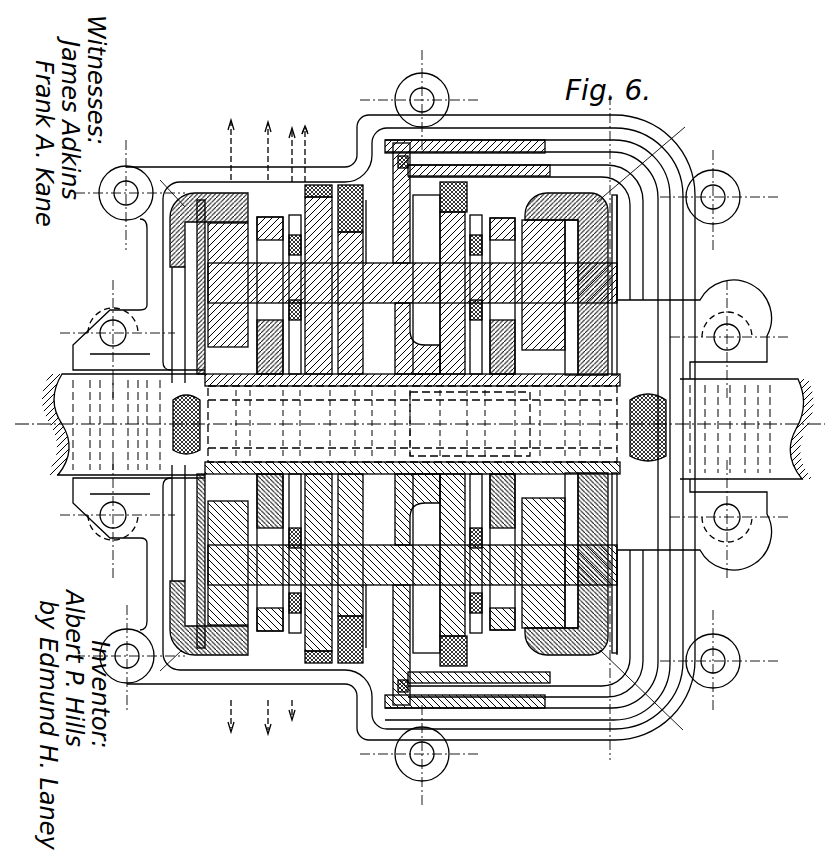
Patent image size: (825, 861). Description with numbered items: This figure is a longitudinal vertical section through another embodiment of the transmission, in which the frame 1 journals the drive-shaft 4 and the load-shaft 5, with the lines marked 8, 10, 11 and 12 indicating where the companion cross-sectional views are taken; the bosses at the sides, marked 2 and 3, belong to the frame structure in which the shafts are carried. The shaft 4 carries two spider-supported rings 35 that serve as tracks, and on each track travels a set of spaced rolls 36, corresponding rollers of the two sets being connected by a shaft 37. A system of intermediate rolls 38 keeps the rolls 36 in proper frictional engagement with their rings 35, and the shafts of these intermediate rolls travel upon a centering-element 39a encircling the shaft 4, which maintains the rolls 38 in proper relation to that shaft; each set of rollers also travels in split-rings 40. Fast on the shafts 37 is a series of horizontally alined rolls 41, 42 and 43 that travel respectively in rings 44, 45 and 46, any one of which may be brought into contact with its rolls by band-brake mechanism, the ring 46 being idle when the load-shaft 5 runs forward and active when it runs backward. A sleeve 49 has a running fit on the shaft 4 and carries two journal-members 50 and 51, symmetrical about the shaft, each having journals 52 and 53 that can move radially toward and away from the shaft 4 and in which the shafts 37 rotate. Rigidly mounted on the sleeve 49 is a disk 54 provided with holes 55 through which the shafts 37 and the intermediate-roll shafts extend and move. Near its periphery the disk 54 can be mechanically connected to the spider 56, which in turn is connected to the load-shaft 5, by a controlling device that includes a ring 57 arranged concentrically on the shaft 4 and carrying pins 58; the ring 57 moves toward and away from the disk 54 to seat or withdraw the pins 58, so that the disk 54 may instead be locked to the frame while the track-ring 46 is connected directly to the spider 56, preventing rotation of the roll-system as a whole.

The frame 1 is at (482, 742).
The left bearing boss 2 is at (120, 536).
The right bearing boss 3 is at (700, 536).
The drive-shaft 4 is at (68, 477).
The load-shaft 5 is at (775, 468).
The section line 8— 8 is at (519, 96).
The section line 10— 10 is at (231, 425).
The section line 11— 11 is at (296, 420).
The section line 12— 12 is at (269, 427).
The spider-supported rings 35 is at (205, 225).
The rolls 36 is at (235, 300).
The shaft 37 is at (345, 198).
The intermediate rolls 38 is at (266, 216).
The centering-element 39a is at (215, 262).
The split-rings 40 is at (274, 168).
The roll 41 is at (345, 184).
The roll 42 is at (350, 232).
The roll 43 is at (455, 164).
The ring 44 is at (296, 214).
The ring 45 is at (322, 184).
The ring 46 is at (476, 214).
The sleeve 49 is at (430, 350).
The journal-member 50 is at (295, 374).
The journal-member 51 is at (450, 458).
The journal 52 is at (290, 445).
The journal 53 is at (520, 460).
The disk 54 is at (445, 206).
The holes 55 is at (445, 250).
The spider 56 is at (500, 140).
The ring 57 is at (393, 250).
The pins 58 is at (440, 185).